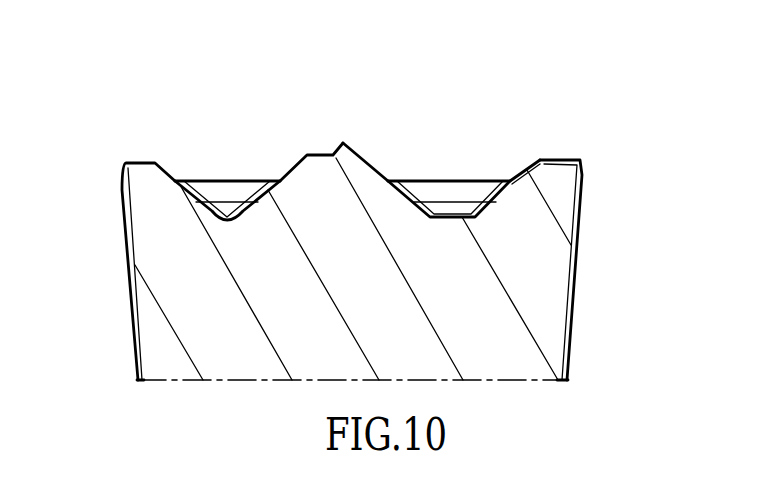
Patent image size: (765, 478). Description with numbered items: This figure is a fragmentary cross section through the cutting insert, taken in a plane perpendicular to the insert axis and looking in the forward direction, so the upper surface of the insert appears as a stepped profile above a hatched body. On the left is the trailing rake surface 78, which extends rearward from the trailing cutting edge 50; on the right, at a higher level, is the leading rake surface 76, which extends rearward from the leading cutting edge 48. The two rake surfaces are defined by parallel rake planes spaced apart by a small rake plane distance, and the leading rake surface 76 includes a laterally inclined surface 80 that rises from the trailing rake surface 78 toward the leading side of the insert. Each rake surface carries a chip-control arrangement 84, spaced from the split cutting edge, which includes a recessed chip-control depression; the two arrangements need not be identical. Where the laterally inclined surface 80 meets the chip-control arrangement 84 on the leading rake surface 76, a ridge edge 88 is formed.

The trailing rake surface 78 is at (140, 162).
The trailing cutting edge 50 is at (210, 181).
The chip-control arrangement 84 is at (240, 192).
The laterally inclined surface 80 is at (337, 148).
The ridge edge 88 is at (343, 143).
The leading cutting edge 48 is at (478, 181).
The leading rake surface 76 is at (565, 159).